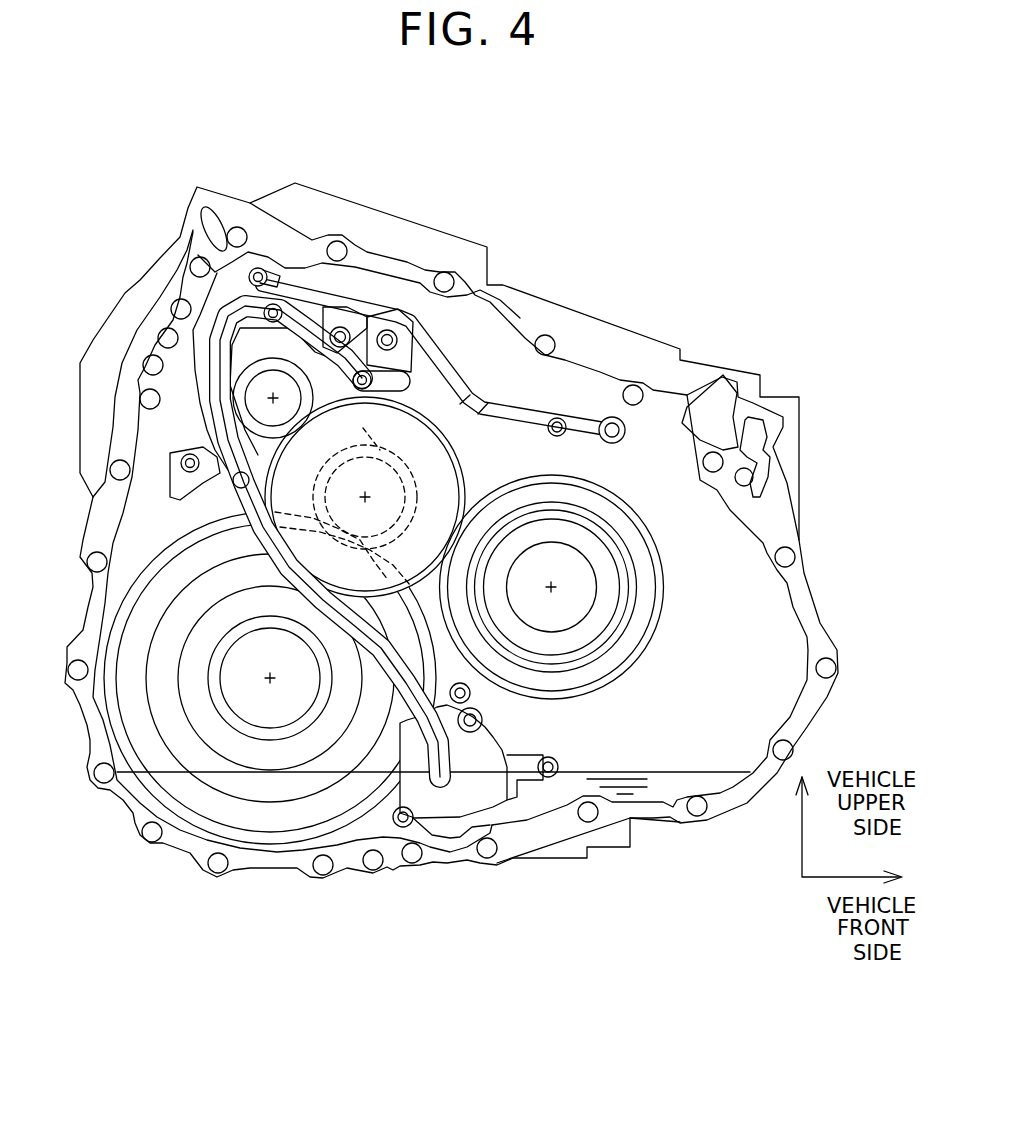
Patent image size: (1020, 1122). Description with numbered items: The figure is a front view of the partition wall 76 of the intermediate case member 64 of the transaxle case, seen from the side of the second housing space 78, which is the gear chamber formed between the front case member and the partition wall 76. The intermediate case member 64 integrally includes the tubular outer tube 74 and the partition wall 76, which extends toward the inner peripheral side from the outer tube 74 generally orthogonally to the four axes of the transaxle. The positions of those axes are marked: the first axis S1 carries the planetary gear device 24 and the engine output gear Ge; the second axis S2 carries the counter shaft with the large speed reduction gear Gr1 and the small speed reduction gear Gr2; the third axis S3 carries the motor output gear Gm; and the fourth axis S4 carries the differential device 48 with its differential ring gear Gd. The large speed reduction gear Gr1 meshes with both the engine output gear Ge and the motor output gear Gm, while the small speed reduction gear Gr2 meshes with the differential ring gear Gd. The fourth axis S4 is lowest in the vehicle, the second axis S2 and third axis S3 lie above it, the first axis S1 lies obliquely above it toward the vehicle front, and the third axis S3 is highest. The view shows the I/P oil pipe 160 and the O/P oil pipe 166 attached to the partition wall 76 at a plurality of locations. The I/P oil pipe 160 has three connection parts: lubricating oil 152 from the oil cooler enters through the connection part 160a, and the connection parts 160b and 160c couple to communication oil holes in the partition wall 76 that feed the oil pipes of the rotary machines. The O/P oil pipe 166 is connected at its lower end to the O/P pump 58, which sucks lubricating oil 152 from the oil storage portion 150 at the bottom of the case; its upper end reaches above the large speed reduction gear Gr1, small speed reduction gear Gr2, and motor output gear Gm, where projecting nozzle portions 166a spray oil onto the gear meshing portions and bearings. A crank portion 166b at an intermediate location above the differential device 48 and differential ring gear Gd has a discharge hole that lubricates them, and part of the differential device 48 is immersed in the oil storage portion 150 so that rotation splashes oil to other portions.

The intermediate case member 64 is at (673, 330).
The outer tube 74 is at (780, 523).
The partition wall 76 is at (767, 623).
The second housing space 78 is at (738, 560).
The differential device 48 is at (240, 676).
The planetary gear device 24 is at (567, 595).
The O/P pump 58 is at (448, 800).
The lubricating oil 152 is at (553, 812).
The oil storage portion 150 is at (720, 770).
The I/P oil pipe 160 is at (441, 302).
The connection part 160a is at (613, 417).
The connection part 160b is at (558, 418).
The connection part 160c is at (257, 266).
The O/P oil pipe 166 is at (222, 462).
The projecting nozzle portions 166a is at (275, 310).
The crank portion 166b is at (217, 475).
The differential ring gear Gd is at (270, 676).
The motor output gear Gm is at (296, 391).
The small speed reduction gear Gr2 is at (365, 497).
The large speed reduction gear Gr1 is at (450, 486).
The engine output gear Ge is at (562, 587).
The first axis S1 is at (540, 574).
The second axis S2 is at (352, 484).
The third axis S3 is at (273, 387).
The fourth axis S4 is at (255, 668).